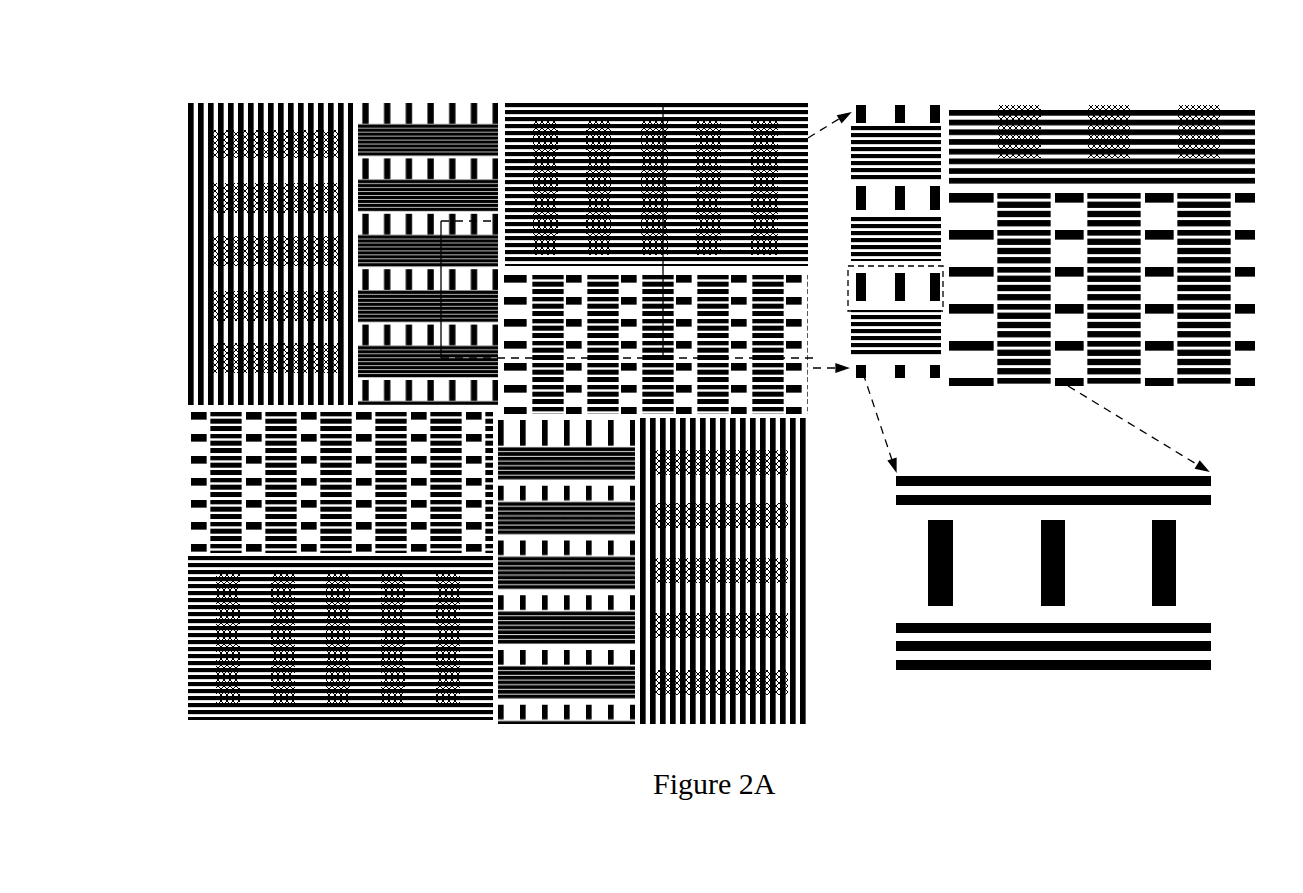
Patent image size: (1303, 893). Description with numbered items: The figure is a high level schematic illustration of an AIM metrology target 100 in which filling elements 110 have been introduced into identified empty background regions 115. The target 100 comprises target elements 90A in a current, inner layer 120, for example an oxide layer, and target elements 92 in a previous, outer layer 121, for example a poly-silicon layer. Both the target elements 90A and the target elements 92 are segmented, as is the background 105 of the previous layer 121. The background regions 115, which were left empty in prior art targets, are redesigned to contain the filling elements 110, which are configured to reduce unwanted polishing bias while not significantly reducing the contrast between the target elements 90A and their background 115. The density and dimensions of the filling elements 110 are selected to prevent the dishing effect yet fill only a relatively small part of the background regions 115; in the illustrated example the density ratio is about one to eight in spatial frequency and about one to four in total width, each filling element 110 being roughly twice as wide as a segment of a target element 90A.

The metrology target 100 is at (684, 378).
The previous outer layer 121 is at (478, 385).
The current inner layer 120 is at (480, 385).
The target elements 92 is at (862, 203).
The background 105 is at (711, 195).
The target elements 90A is at (856, 439).
The filling elements 110 is at (840, 485).
The background regions 115 is at (915, 441).